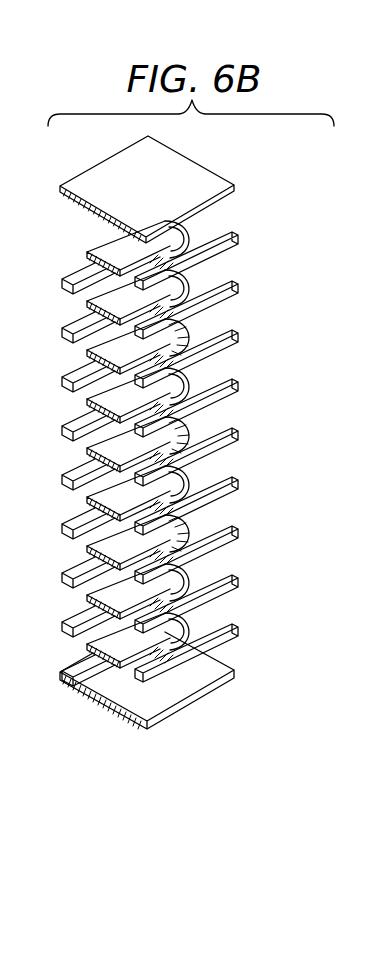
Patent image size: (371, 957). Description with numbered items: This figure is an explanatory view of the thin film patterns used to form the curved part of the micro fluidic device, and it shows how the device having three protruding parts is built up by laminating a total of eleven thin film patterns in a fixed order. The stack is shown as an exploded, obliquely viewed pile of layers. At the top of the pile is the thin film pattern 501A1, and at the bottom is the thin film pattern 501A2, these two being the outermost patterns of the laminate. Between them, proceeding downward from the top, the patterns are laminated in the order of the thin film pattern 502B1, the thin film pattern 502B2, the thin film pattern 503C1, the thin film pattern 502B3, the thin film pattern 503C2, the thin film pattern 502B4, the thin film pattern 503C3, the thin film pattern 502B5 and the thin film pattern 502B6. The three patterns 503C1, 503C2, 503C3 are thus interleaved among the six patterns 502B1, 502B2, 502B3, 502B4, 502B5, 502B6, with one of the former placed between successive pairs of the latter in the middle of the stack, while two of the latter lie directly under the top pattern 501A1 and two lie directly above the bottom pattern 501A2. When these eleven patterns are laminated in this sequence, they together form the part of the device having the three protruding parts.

The thin film pattern 501A1 is at (236, 185).
The thin film pattern 501A2 is at (236, 670).
The thin film pattern 502B1 is at (238, 234).
The thin film pattern 502B2 is at (238, 283).
The thin film pattern 502B3 is at (238, 381).
The thin film pattern 502B4 is at (238, 479).
The thin film pattern 502B5 is at (238, 577).
The thin film pattern 502B6 is at (238, 626).
The thin film pattern 503C1 is at (238, 332).
The thin film pattern 503C2 is at (238, 430).
The thin film pattern 503C3 is at (238, 528).